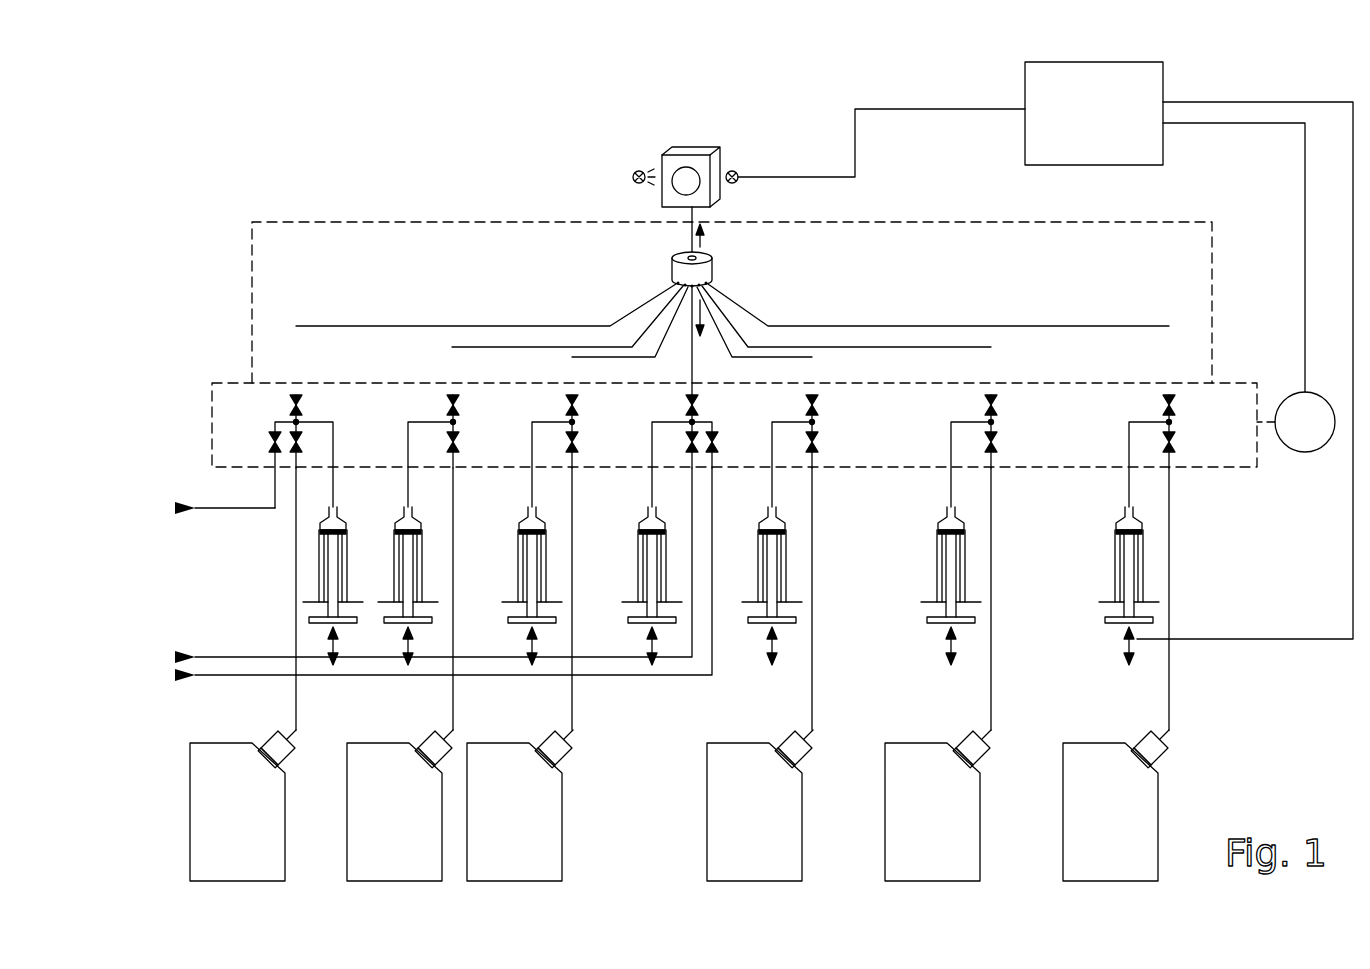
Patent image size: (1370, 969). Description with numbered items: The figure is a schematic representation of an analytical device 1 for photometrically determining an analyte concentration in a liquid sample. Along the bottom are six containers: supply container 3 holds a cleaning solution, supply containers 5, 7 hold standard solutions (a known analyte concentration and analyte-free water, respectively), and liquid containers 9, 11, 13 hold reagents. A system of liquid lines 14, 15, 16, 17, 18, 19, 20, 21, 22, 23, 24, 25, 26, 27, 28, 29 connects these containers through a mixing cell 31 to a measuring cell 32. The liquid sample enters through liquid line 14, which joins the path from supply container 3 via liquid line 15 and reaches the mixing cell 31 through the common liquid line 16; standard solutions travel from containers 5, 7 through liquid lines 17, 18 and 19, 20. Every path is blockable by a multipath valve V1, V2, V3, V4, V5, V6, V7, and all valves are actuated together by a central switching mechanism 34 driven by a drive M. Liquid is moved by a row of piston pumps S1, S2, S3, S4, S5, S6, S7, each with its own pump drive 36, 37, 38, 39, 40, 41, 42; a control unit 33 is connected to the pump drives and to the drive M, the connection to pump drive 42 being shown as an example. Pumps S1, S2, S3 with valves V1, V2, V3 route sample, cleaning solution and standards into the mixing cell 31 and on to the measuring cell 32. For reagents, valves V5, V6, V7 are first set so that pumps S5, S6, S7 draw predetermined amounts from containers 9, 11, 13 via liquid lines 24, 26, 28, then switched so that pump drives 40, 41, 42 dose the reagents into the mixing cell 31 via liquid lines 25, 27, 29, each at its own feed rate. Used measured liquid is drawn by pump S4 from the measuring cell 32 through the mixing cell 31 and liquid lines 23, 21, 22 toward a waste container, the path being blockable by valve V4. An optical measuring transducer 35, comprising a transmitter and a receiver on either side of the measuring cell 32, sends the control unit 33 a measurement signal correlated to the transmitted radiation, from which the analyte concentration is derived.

The analytical device 1 is at (362, 132).
The supply container 3 is at (226, 827).
The supply container 5 is at (383, 827).
The supply container 7 is at (503, 827).
The liquid container 9 is at (743, 827).
The liquid container 11 is at (916, 827).
The liquid container 13 is at (1094, 827).
The liquid line 14 is at (206, 512).
The liquid line 15 is at (295, 552).
The liquid line 16 is at (340, 324).
The liquid line 17 is at (456, 526).
The liquid line 18 is at (450, 355).
The liquid line 19 is at (576, 526).
The liquid line 20 is at (570, 373).
The liquid line 21 is at (620, 677).
The liquid line 22 is at (250, 655).
The liquid line 23 is at (695, 353).
The liquid line 24 is at (813, 695).
The liquid line 25 is at (813, 373).
The liquid line 26 is at (992, 695).
The liquid line 27 is at (992, 362).
The liquid line 28 is at (1170, 695).
The liquid line 29 is at (1117, 325).
The mixing cell 31 is at (713, 262).
The measuring cell 32 is at (714, 195).
The control unit 33 is at (1081, 126).
The central switching mechanism 34 is at (1218, 468).
The optical measuring transducer 35 is at (732, 169).
The pump drive 36 is at (343, 643).
The pump drive 37 is at (418, 640).
The pump drive 38 is at (541, 642).
The pump drive 39 is at (650, 643).
The pump drive 40 is at (770, 640).
The pump drive 41 is at (945, 643).
The pump drive 42 is at (1125, 652).
The multipath valve V1 is at (303, 422).
The multipath valve V2 is at (460, 422).
The multipath valve V3 is at (579, 422).
The multipath valve V4 is at (699, 422).
The multipath valve V5 is at (819, 422).
The multipath valve V6 is at (998, 422).
The multipath valve V7 is at (1176, 422).
The piston pump S1 is at (339, 565).
The piston pump S2 is at (415, 565).
The piston pump S3 is at (522, 565).
The piston pump S4 is at (642, 565).
The piston pump S5 is at (762, 565).
The piston pump S6 is at (941, 565).
The piston pump S7 is at (1119, 565).